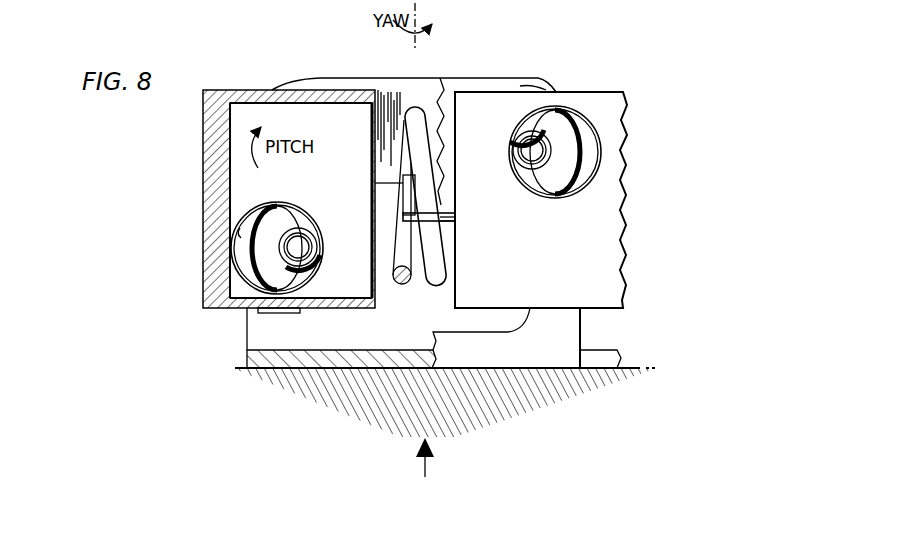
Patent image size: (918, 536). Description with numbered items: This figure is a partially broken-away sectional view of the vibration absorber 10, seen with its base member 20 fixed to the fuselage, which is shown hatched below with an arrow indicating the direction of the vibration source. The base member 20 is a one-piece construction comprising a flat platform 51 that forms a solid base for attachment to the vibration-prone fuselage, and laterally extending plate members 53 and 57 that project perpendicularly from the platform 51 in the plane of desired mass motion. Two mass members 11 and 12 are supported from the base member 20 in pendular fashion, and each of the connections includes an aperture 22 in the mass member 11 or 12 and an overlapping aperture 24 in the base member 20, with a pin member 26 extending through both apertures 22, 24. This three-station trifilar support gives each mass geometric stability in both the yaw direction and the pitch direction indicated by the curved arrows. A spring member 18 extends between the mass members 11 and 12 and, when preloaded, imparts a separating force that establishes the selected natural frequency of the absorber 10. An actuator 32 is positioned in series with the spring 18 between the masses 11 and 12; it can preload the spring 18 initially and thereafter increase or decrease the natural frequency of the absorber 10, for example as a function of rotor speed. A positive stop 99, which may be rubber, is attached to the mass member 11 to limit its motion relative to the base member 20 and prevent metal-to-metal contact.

The vibration absorber 10 is at (680, 109).
The mass member 11 is at (251, 91).
The mass member 12 is at (598, 92).
The spring member 18 is at (433, 282).
The base member 20 is at (586, 331).
The aperture 22 is at (243, 242).
The aperture 24 is at (306, 266).
The pin member 26 is at (304, 232).
The actuator 32 is at (403, 217).
The flat platform 51 is at (250, 358).
The plate member 53 is at (338, 80).
The plate member 57 is at (528, 88).
The positive stop 99 is at (278, 318).